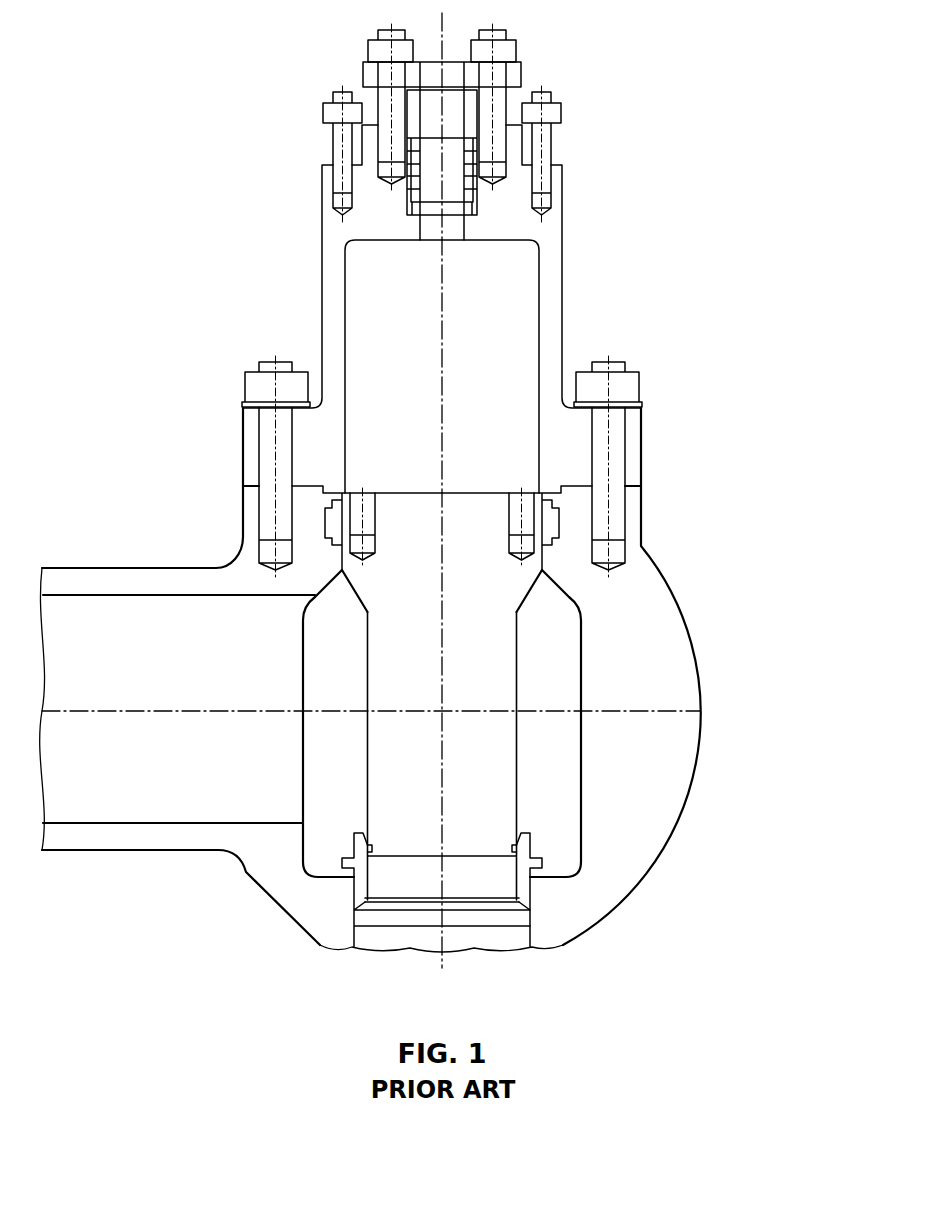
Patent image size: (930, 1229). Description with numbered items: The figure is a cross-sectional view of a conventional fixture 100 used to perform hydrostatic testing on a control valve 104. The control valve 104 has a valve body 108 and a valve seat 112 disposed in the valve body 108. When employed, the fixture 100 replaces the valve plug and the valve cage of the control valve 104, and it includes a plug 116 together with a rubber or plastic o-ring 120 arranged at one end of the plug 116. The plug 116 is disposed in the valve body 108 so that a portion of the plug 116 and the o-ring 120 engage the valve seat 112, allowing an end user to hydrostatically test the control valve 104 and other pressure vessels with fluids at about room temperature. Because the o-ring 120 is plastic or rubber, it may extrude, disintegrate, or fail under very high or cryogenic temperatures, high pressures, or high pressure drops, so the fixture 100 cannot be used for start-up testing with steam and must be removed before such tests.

The fixture 100 is at (344, 742).
The control valve 104 is at (723, 527).
The valve body 108 is at (700, 674).
The valve seat 112 is at (532, 864).
The plug 116 is at (537, 676).
The o-ring 120 is at (514, 848).